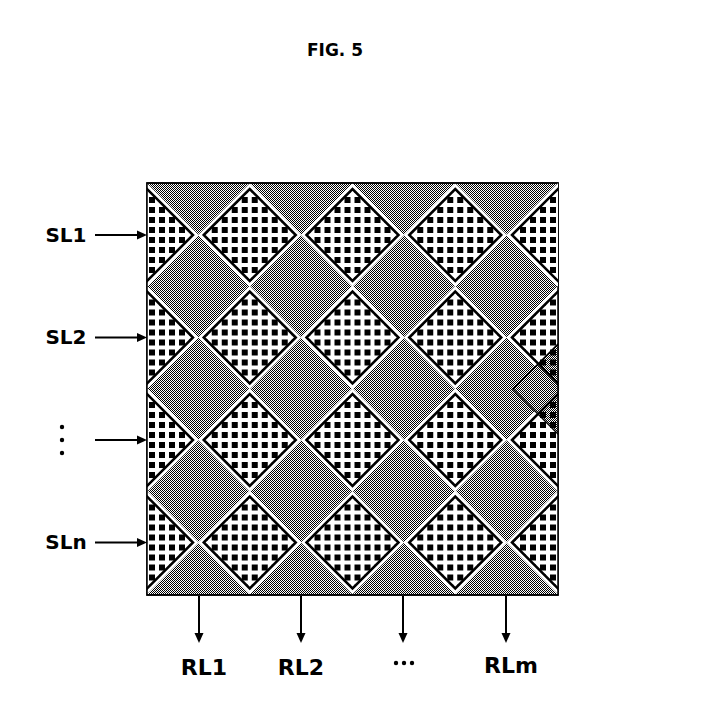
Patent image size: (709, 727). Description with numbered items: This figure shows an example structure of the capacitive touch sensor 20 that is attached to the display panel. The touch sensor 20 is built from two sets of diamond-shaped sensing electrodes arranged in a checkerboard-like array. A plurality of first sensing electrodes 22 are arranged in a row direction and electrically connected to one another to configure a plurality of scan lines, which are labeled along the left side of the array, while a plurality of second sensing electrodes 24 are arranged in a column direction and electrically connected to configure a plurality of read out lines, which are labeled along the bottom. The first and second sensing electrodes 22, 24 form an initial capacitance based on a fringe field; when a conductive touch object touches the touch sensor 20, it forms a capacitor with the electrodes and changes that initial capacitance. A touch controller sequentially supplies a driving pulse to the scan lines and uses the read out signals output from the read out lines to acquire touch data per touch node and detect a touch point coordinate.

The capacitive touch sensor 20 is at (78, 179).
The first sensing electrode 22 is at (559, 241).
The second sensing electrode 24 is at (559, 392).